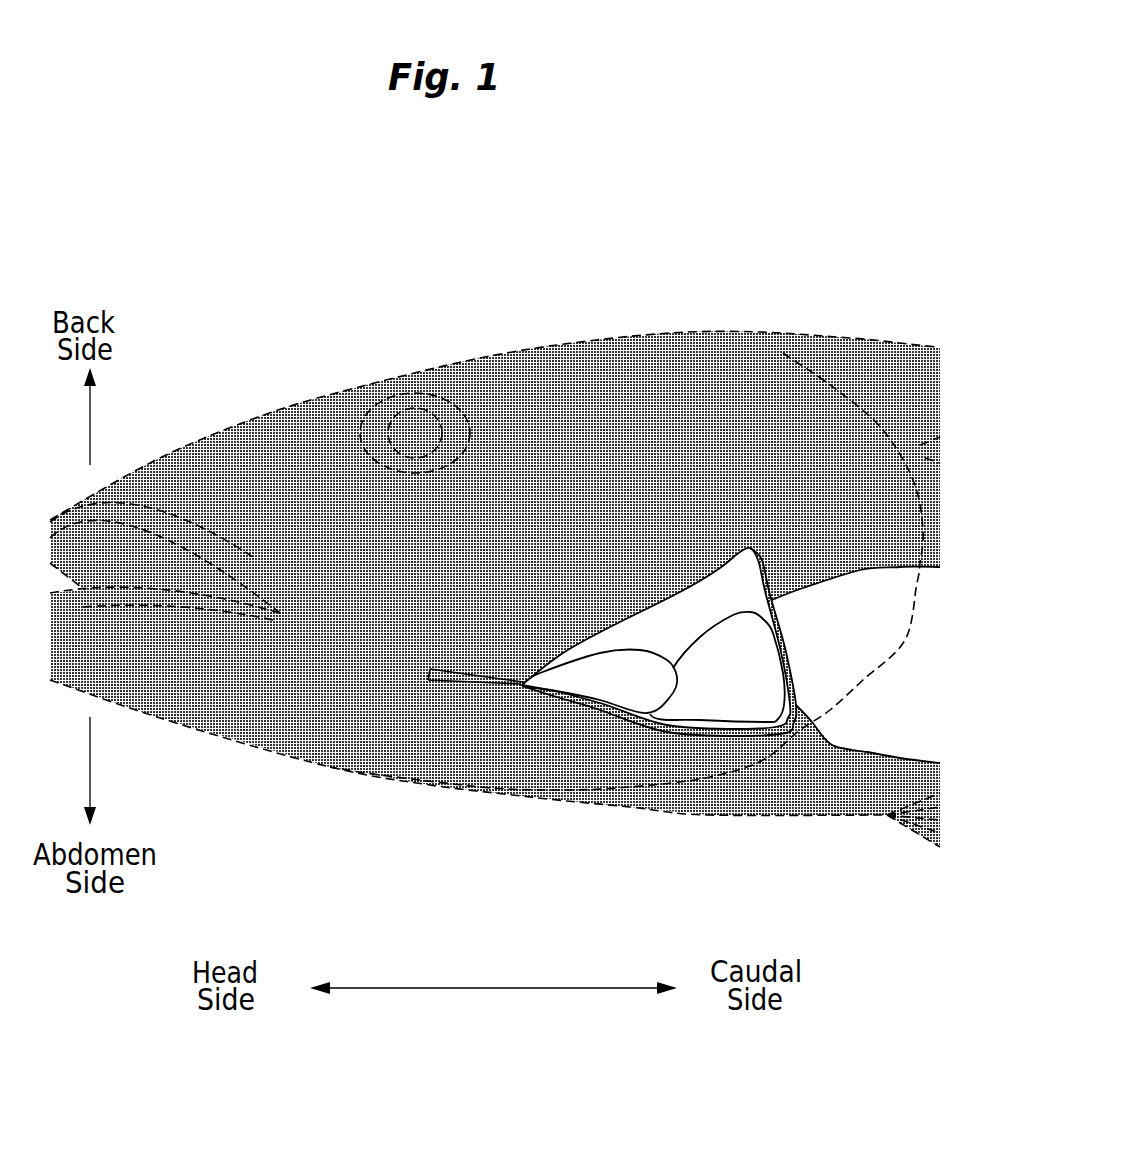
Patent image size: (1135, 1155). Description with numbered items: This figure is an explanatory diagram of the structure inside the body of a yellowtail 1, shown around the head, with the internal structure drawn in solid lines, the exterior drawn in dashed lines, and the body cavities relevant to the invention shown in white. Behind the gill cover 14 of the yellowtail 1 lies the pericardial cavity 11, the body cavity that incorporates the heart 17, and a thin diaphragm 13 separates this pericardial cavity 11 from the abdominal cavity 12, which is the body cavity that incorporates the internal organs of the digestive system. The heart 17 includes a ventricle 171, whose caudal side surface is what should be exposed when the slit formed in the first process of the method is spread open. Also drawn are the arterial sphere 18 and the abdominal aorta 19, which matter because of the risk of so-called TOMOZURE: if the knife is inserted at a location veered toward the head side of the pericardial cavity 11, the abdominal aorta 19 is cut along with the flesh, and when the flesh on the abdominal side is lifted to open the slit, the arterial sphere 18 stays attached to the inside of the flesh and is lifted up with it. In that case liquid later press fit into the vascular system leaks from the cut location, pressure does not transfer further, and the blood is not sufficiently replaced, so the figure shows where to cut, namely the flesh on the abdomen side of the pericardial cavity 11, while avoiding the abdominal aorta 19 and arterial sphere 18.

The yellowtail 1 is at (258, 264).
The pericardial cavity 11 is at (667, 625).
The abdominal cavity 12 is at (857, 590).
The diaphragm 13 is at (800, 710).
The gill cover 14 is at (833, 388).
The heart 17 is at (709, 581).
The ventricle 171 is at (723, 697).
The arterial sphere 18 is at (608, 690).
The abdominal aorta 19 is at (482, 678).